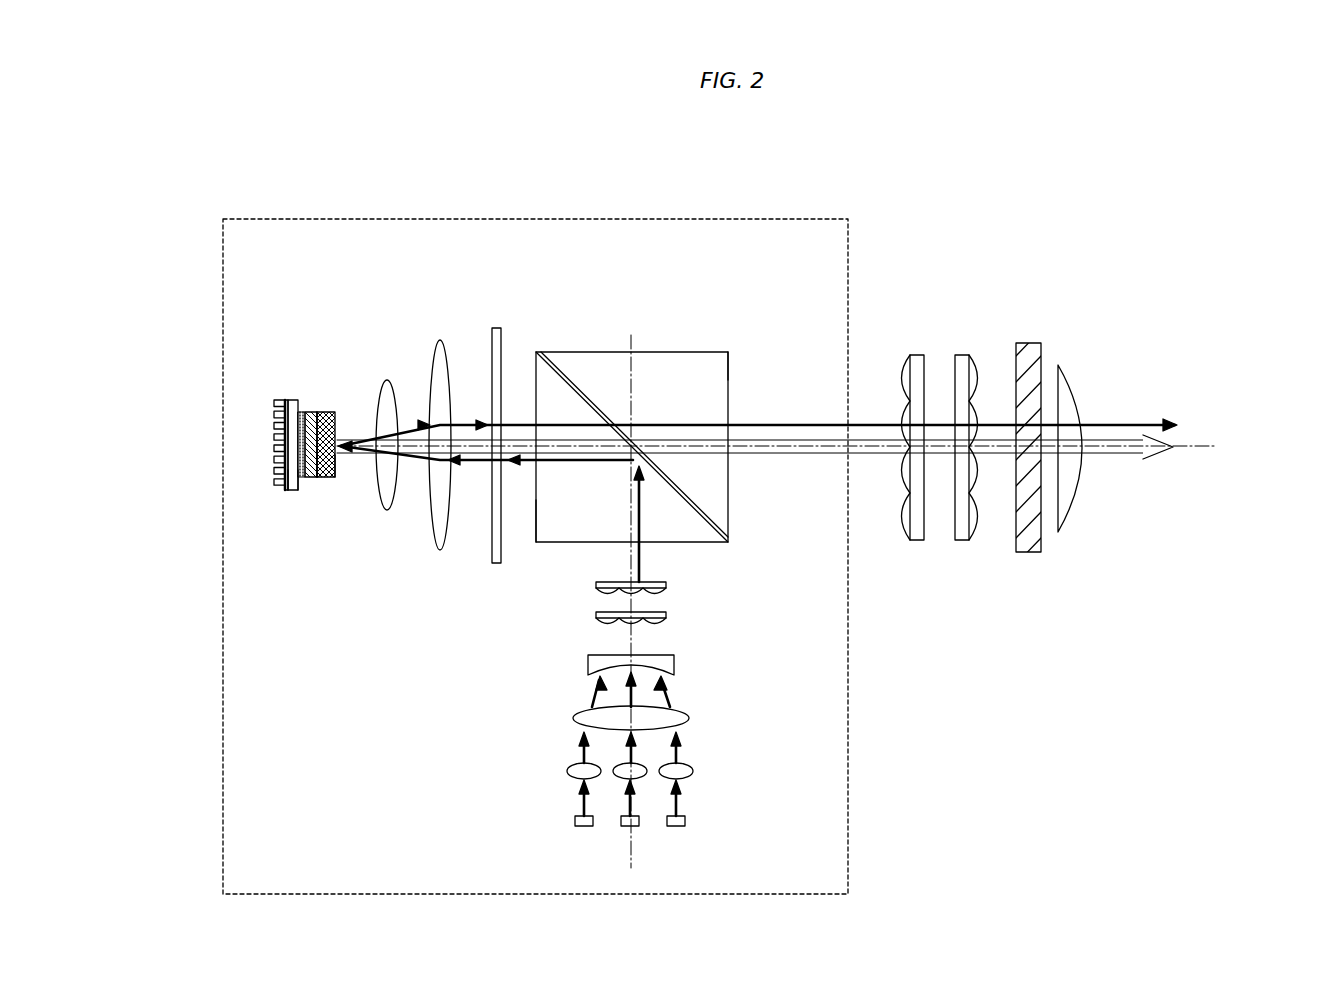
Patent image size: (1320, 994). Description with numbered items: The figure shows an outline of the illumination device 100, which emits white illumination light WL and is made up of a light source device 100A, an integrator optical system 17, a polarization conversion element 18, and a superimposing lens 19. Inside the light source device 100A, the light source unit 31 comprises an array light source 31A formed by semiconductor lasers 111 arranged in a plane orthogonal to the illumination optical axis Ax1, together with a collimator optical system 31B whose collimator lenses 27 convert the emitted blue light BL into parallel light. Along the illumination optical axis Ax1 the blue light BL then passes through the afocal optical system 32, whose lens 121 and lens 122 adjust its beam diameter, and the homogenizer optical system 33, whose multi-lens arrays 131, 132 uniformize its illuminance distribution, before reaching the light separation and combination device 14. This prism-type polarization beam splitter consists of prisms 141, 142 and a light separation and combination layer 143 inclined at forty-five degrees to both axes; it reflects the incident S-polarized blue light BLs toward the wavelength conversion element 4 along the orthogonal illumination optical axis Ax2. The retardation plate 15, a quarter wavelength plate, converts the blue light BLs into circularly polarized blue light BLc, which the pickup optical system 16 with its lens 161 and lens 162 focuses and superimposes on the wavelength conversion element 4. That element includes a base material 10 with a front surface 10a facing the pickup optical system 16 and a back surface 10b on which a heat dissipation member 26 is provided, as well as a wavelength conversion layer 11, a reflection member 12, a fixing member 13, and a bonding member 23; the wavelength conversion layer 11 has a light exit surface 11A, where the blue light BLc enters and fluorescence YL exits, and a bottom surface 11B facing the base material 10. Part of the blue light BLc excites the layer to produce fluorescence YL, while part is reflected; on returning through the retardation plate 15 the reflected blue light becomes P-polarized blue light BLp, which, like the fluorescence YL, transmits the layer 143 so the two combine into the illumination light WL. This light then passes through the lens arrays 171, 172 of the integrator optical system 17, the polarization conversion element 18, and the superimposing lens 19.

The illumination device 100 is at (968, 180).
The light source device 100A is at (753, 219).
The wavelength conversion element 4 is at (315, 419).
The heat dissipation member 26 is at (277, 400).
The base material 10 is at (277, 460).
The front surface 10a is at (300, 480).
The back surface 10b is at (287, 480).
The fixing member 13 is at (302, 412).
The reflection member 12 is at (311, 412).
The bonding member 23 is at (318, 412).
The wavelength conversion layer 11 is at (351, 448).
The light exit surface 11A is at (340, 462).
The bottom surface 11B is at (317, 478).
The pickup optical system 16 is at (401, 500).
The lens 161 is at (437, 552).
The lens 162 is at (386, 512).
The retardation plate 15 is at (497, 566).
The light separation and combination device 14 is at (648, 443).
The prism 141 is at (570, 515).
The prism 142 is at (688, 365).
The light separation and combination layer 143 is at (598, 400).
The homogenizer optical system 33 is at (690, 604).
The multi-lens array 131 is at (668, 618).
The multi-lens array 132 is at (668, 586).
The afocal optical system 32 is at (683, 691).
The lens 121 is at (690, 718).
The lens 122 is at (677, 660).
The light source unit 31 is at (665, 791).
The collimator lens 27 is at (690, 766).
The array light source 31A is at (700, 821).
The collimator optical system 31B is at (700, 776).
The semiconductor laser 111 is at (668, 826).
The integrator optical system 17 is at (934, 386).
The lens array 171 is at (913, 357).
The lens array 172 is at (976, 405).
The polarization conversion element 18 is at (1026, 345).
The superimposing lens 19 is at (1070, 380).
The blue light BL is at (636, 561).
The circularly polarized blue light BLc is at (482, 420).
The P-polarized blue light BLp is at (520, 420).
The S-polarized blue light BLs is at (518, 470).
The fluorescence YL is at (412, 430).
The illumination light WL is at (1237, 345).
The illumination optical axis Ax1 is at (633, 860).
The illumination optical axis Ax2 is at (1211, 450).